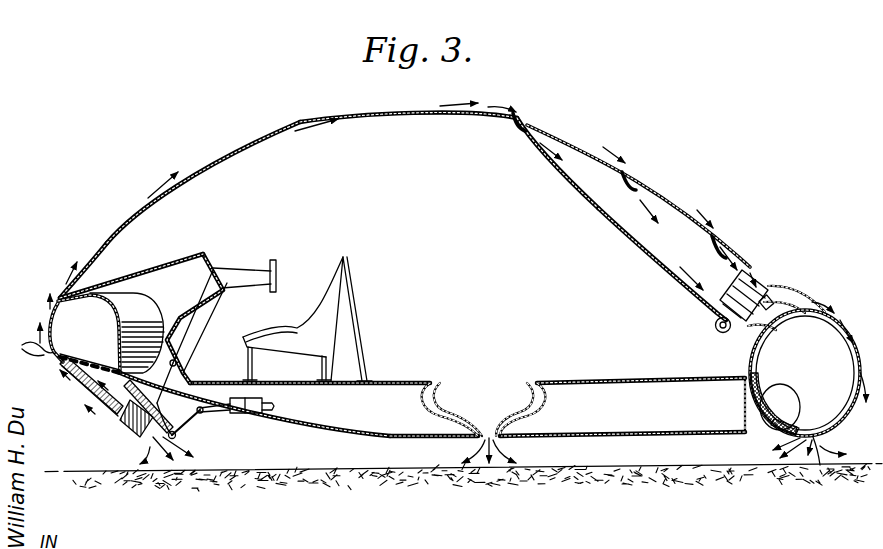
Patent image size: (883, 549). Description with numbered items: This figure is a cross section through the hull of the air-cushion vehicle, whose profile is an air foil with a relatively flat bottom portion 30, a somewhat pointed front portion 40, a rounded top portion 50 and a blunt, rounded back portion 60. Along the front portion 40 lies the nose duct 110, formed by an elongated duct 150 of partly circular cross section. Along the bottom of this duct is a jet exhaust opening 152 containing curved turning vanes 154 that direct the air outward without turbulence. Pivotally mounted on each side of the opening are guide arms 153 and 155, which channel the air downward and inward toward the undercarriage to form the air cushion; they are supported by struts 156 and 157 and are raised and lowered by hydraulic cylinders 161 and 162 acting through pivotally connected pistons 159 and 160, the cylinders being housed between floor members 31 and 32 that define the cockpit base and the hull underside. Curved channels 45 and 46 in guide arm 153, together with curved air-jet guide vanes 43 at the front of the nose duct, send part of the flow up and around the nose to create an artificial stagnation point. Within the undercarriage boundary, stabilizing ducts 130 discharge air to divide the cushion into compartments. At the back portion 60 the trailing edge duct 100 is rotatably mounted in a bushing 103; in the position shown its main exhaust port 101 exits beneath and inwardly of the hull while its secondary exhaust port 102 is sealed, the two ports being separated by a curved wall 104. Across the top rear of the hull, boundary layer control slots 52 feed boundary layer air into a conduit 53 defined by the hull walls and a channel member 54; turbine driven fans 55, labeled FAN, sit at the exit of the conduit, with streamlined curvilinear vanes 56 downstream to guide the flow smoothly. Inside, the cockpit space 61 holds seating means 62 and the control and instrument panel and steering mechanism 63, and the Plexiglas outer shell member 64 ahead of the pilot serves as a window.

The bottom portion 30 is at (622, 437).
The floor member 31 is at (393, 381).
The floor member 32 is at (313, 434).
The front portion 40 is at (60, 298).
The curved air-jet guide vanes 43 is at (24, 345).
The curved channel 45 is at (90, 390).
The curved channel 46 is at (120, 420).
The top portion 50 is at (393, 111).
The boundary layer control slots 52 is at (524, 118).
The boundary layer conduit 53 is at (582, 194).
The channel member 54 is at (623, 240).
The turbine driven fans 55 is at (716, 318).
The streamlined curvilinear vanes 56 is at (789, 297).
The back portion 60 is at (850, 390).
The cockpit space 61 is at (255, 262).
The seating means 62 is at (338, 255).
The control panel, instrument panel and steering mechanism 63 is at (201, 254).
The outer shell member 64 is at (203, 167).
The trailing edge duct 100 is at (825, 345).
The main exhaust port 101 is at (821, 466).
The secondary exhaust port 102 is at (773, 424).
The bushing 103 is at (750, 410).
The wall 104 is at (786, 384).
The nose duct 110 is at (52, 315).
The stabilizing ducts 130 is at (481, 397).
The elongated duct 150 is at (147, 310).
The jet exhaust opening 152 is at (92, 412).
The guide arm 153 is at (130, 410).
The curved turning vanes 154 is at (90, 360).
The guide arm 155 is at (178, 437).
The strut 156 is at (134, 430).
The strut 157 is at (205, 418).
The piston 159 is at (167, 388).
The piston 160 is at (218, 405).
The hydraulic cylinder 161 is at (160, 367).
The hydraulic cylinder 162 is at (252, 402).
The fan FAN is at (758, 272).